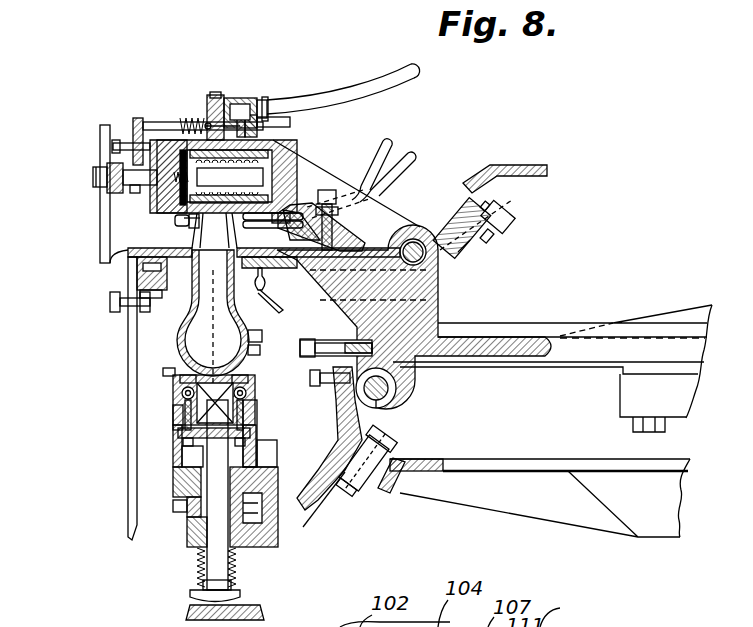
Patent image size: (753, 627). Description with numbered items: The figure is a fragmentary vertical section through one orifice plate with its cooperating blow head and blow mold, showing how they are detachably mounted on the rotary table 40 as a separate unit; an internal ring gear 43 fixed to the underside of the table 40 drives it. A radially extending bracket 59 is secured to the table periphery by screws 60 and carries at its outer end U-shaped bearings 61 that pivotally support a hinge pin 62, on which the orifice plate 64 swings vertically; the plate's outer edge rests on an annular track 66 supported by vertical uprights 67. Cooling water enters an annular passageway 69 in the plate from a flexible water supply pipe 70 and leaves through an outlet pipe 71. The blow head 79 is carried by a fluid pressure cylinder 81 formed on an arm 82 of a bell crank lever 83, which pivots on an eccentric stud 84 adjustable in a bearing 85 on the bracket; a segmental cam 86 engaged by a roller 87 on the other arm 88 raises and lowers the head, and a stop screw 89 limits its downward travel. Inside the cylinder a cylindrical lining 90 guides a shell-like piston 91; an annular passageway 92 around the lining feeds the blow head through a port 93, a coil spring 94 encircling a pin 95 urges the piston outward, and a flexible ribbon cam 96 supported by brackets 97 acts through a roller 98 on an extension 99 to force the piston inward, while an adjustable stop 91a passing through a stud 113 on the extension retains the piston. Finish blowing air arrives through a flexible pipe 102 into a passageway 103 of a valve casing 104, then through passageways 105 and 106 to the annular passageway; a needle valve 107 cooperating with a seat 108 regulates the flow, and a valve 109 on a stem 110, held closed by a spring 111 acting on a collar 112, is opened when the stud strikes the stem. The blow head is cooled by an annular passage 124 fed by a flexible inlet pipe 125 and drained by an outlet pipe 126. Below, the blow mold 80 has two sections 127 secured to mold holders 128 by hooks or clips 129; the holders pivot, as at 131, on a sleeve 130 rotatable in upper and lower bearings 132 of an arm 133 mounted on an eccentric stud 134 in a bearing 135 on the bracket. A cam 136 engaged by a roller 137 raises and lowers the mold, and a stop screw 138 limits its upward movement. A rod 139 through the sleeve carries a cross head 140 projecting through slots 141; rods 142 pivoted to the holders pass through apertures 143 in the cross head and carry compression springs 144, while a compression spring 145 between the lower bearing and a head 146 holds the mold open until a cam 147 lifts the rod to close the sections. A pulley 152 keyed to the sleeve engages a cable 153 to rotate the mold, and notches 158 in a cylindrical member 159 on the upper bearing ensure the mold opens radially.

The table 40 is at (533, 330).
The internal ring gear 43 is at (627, 397).
The bracket 59 is at (462, 315).
The screws 60 is at (402, 376).
The bearings 61 is at (266, 270).
The hinge pin 62 is at (252, 282).
The orifice plate 64 is at (130, 251).
The annular track 66 is at (112, 300).
The uprights 67 is at (128, 340).
The annular passageway 69 is at (185, 268).
The water supply pipe 70 is at (389, 150).
The outlet pipe 71 is at (283, 288).
The blow head 79 is at (195, 240).
The blow mold 80 is at (213, 325).
The fluid pressure cylinder 81 is at (273, 184).
The arm 82 is at (368, 209).
The bell crank lever 83 is at (442, 219).
The eccentric stud 84 is at (440, 276).
The bearing 85 is at (465, 240).
The segmental cam 86 is at (485, 165).
The roller 87 is at (510, 225).
The arm 88 is at (493, 240).
The stop screw 89 is at (352, 243).
The cylindrical lining 90 is at (172, 148).
The piston 91 is at (180, 146).
The adjustable stop 91a is at (125, 168).
The passageway 92 is at (292, 142).
The port 93 is at (190, 227).
The coil spring 94 is at (278, 195).
The pin 95 is at (295, 168).
The flexible ribbon cam 96 is at (107, 166).
The brackets 97 is at (100, 210).
The roller 98 is at (95, 180).
The extension 99 is at (113, 147).
The flexible pipe 102 is at (396, 80).
The passageway 103 is at (258, 108).
The valve casing 104 is at (268, 100).
The passageway 105 is at (226, 108).
The passageway 106 is at (272, 140).
The needle valve 107 is at (215, 110).
The seat 108 is at (238, 102).
The valve 109 is at (285, 121).
The stem 110 is at (186, 125).
The spring 111 is at (188, 120).
The collar 112 is at (180, 117).
The stud 113 is at (136, 150).
The annular passage 124 is at (186, 302).
The flexible inlet pipe 125 is at (408, 162).
The outlet pipe 126 is at (175, 220).
The sections 127 is at (253, 332).
The mold holders 128 is at (252, 352).
The hooks or clips 129 is at (262, 372).
The sleeve 130 is at (175, 488).
The pivot 131 is at (250, 432).
The bearings 132 is at (180, 510).
The arm 133 is at (315, 497).
The eccentric stud 134 is at (396, 390).
The bearing 135 is at (390, 405).
The cam 136 is at (402, 474).
The roller 137 is at (372, 496).
The stop screw 138 is at (316, 364).
The rod 139 is at (238, 562).
The cross head 140 is at (176, 433).
The slots 141 is at (250, 472).
The rods 142 is at (262, 392).
The apertures 143 is at (246, 441).
The compression springs 144 is at (173, 412).
The compression spring 145 is at (193, 586).
The head 146 is at (245, 596).
The cam 147 is at (195, 607).
The pulley 152 is at (315, 522).
The cable 153 is at (184, 532).
The notches 158 is at (175, 421).
The cylindrical member 159 is at (175, 458).